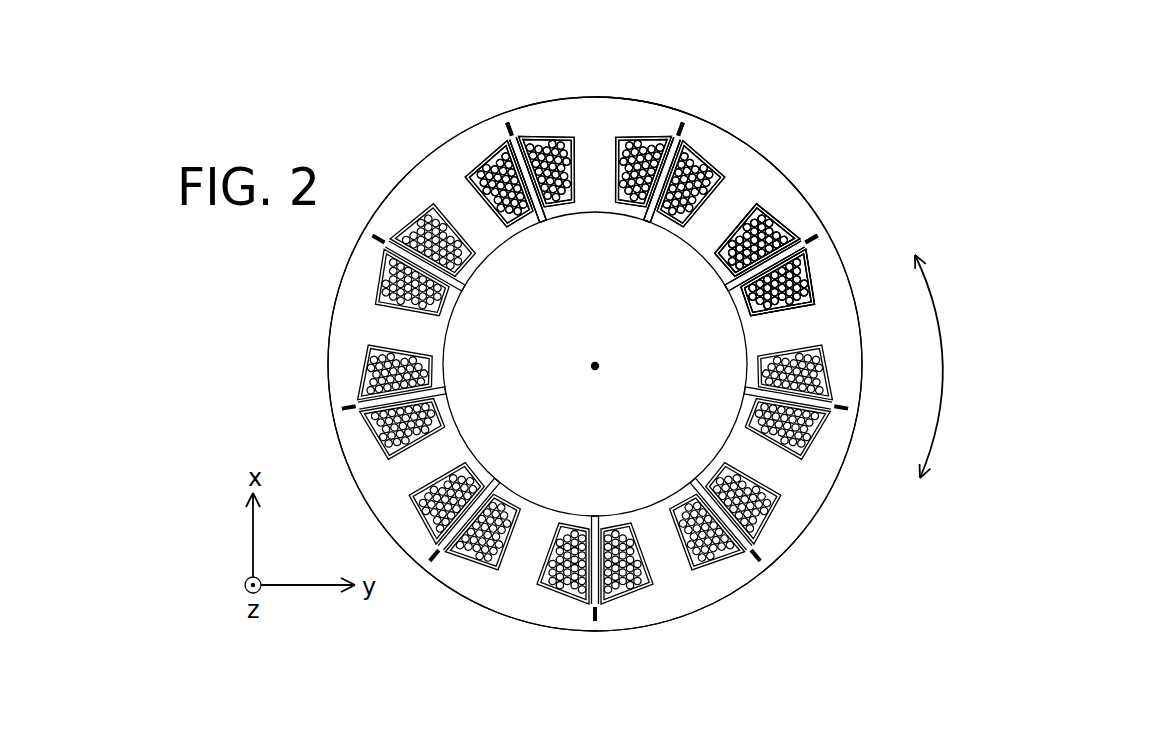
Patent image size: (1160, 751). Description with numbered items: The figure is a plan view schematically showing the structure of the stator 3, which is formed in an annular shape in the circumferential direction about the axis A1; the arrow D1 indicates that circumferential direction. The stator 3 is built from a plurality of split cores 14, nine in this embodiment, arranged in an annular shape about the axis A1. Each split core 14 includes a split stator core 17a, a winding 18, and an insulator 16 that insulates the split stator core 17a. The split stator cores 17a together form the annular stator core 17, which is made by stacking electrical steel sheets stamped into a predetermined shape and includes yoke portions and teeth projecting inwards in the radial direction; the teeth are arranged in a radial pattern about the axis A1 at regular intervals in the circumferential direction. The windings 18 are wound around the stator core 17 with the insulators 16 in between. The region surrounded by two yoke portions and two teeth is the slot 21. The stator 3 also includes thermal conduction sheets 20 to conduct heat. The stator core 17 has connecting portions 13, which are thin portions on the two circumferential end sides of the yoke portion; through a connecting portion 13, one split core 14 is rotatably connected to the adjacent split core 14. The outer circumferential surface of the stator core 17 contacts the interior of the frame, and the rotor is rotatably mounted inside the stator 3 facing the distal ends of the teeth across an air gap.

The stator 3 is at (363, 128).
The connecting portion 13 is at (505, 122).
The split core 14 is at (430, 170).
The insulator 16 is at (760, 213).
The stator core 17 is at (595, 97).
The split stator core 17a is at (743, 163).
The winding 18 is at (500, 170).
The thermal conduction sheet 20 is at (508, 153).
The slot 21 is at (546, 232).
The axis A1 is at (595, 350).
The circumferential direction D1 is at (943, 365).